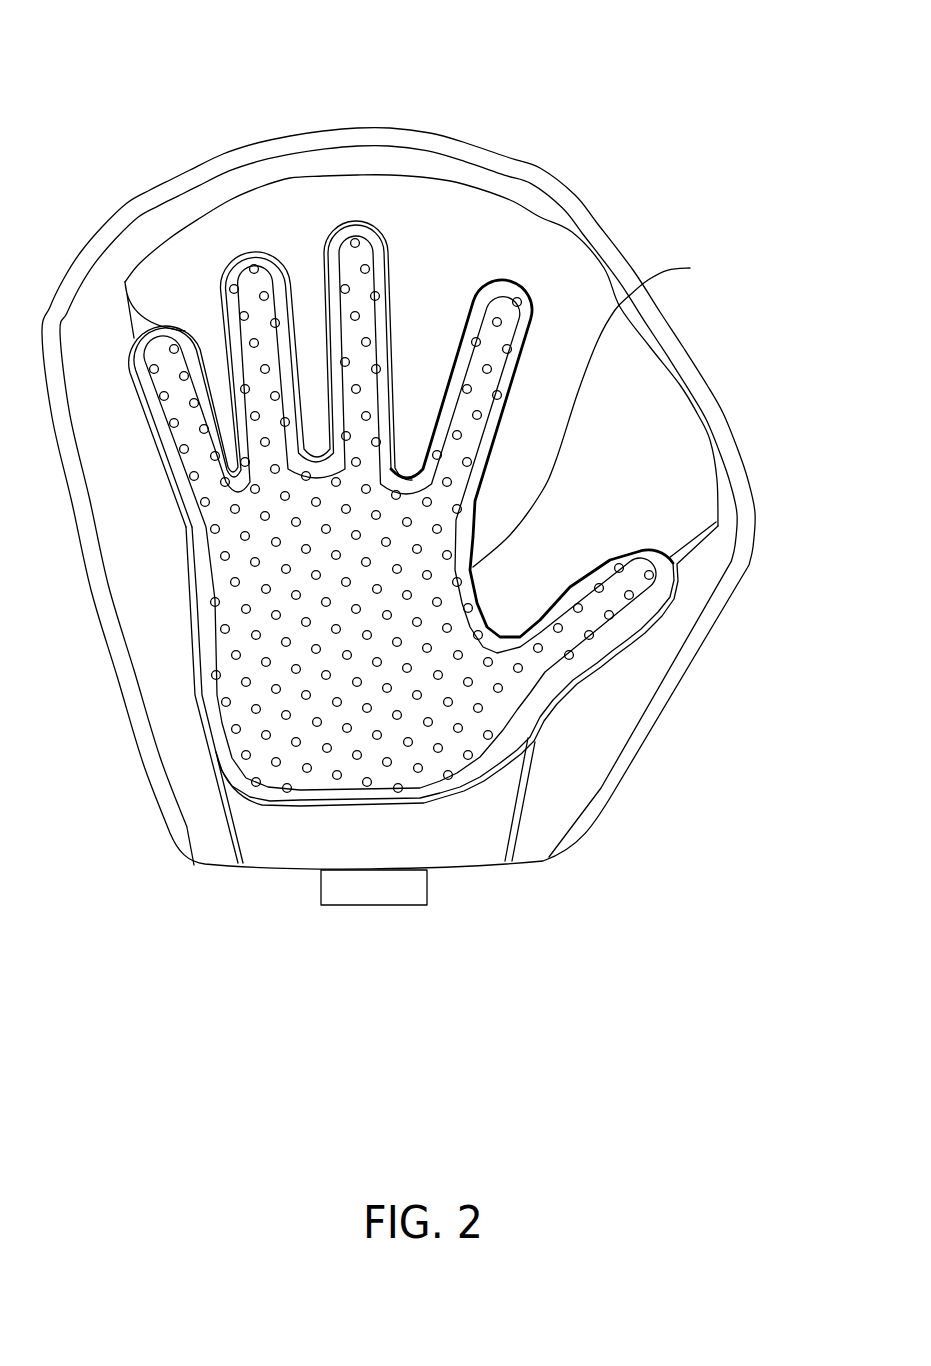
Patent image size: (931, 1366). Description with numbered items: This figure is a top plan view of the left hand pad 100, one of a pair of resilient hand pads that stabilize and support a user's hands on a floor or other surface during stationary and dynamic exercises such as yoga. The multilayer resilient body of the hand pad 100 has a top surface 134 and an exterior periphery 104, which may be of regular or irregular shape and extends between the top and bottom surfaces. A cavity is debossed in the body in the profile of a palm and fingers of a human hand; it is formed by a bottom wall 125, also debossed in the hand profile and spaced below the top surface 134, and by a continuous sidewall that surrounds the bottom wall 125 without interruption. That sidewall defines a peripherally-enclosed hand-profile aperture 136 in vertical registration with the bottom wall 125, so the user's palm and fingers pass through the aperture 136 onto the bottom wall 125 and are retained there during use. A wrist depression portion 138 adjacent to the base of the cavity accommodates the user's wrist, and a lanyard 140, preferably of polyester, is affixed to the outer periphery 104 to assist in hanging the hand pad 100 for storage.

The hand pad 100 is at (529, 104).
The exterior periphery 104 is at (748, 557).
The bottom wall 125 is at (347, 688).
The top surface 134 is at (661, 494).
The aperture 136 is at (602, 411).
The wrist depression portion 138 is at (523, 805).
The lanyard 140 is at (373, 906).